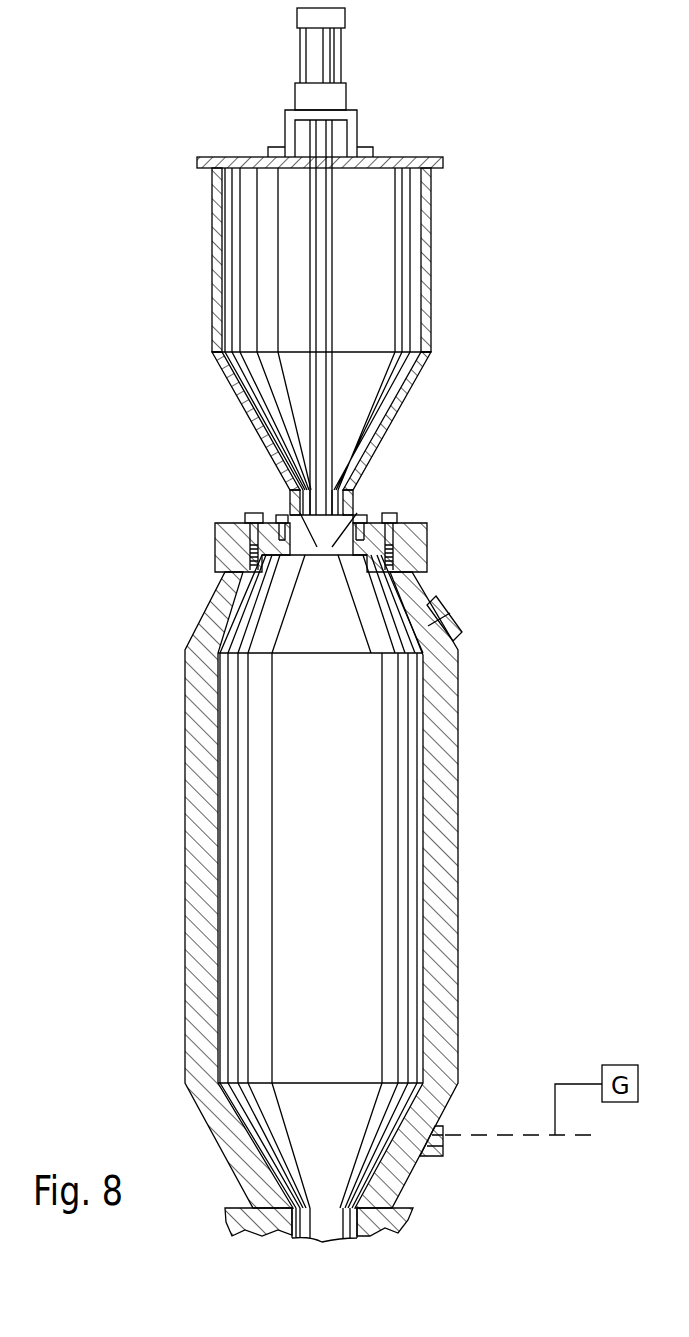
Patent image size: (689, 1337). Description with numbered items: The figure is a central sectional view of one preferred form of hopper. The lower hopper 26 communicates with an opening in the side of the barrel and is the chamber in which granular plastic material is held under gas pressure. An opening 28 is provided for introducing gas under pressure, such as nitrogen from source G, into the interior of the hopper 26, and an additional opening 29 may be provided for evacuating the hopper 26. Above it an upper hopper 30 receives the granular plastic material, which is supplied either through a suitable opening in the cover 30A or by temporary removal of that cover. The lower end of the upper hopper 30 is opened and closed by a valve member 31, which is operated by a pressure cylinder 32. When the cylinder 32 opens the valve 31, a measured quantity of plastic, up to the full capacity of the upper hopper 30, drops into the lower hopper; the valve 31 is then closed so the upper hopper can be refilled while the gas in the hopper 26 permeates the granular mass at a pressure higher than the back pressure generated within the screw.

The hopper 26 is at (470, 832).
The opening 28 is at (445, 1132).
The additional opening 29 is at (452, 618).
The upper hopper 30 is at (424, 259).
The cover 30A is at (440, 160).
The valve member 31 is at (356, 505).
The pressure cylinder 32 is at (323, 53).